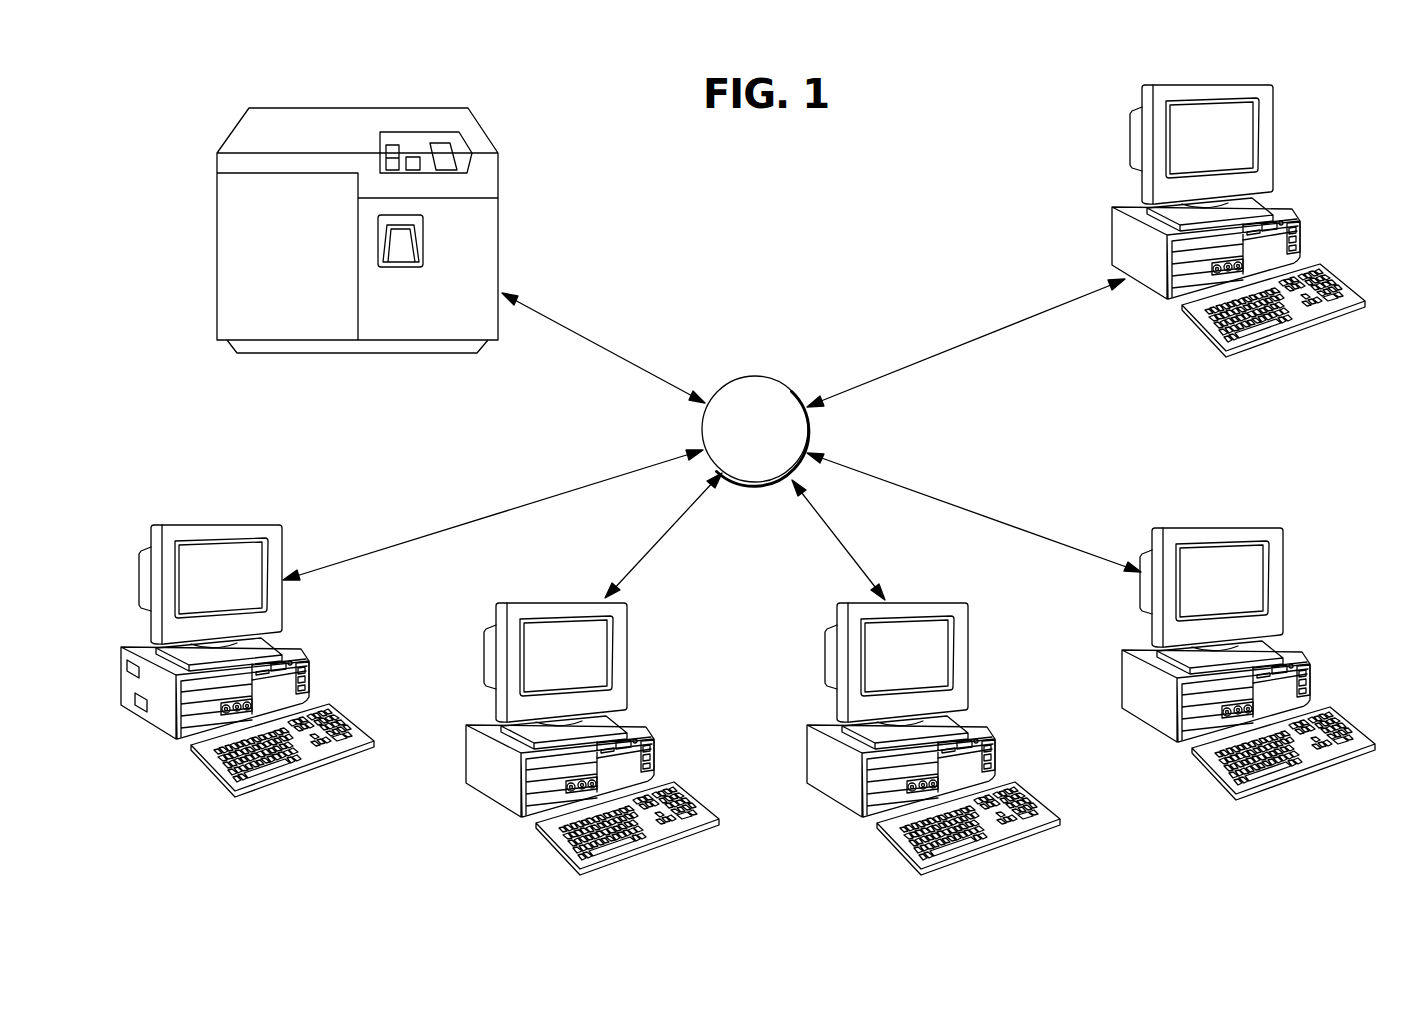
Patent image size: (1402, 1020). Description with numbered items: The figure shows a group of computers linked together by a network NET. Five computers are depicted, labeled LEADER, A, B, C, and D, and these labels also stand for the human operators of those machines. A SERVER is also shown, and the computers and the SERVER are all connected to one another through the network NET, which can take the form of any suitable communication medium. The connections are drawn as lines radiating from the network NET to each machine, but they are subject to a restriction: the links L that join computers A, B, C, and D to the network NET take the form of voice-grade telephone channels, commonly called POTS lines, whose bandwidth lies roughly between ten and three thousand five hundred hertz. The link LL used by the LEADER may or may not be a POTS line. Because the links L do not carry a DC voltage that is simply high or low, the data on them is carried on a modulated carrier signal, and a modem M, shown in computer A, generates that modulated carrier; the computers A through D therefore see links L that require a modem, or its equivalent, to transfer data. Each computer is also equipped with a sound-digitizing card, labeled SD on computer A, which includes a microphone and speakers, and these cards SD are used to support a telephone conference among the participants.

The server SERVER is at (357, 253).
The network NET is at (755, 431).
The leader computer LEADER is at (1238, 234).
The computer A is at (247, 645).
The computer B is at (592, 721).
The computer C is at (933, 722).
The computer D is at (1248, 648).
The link LL is at (604, 347).
The links L is at (548, 500).
The modem M is at (122, 665).
The sound-digitizing card SD is at (140, 713).